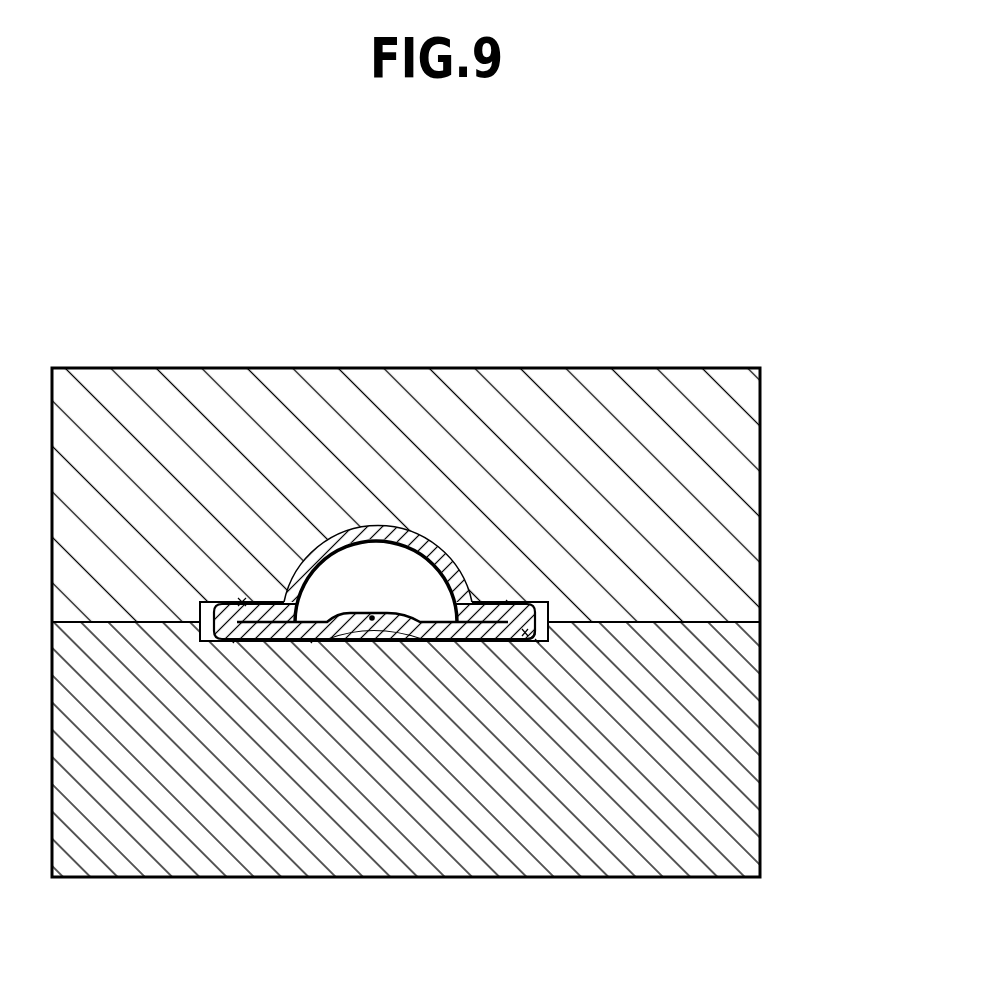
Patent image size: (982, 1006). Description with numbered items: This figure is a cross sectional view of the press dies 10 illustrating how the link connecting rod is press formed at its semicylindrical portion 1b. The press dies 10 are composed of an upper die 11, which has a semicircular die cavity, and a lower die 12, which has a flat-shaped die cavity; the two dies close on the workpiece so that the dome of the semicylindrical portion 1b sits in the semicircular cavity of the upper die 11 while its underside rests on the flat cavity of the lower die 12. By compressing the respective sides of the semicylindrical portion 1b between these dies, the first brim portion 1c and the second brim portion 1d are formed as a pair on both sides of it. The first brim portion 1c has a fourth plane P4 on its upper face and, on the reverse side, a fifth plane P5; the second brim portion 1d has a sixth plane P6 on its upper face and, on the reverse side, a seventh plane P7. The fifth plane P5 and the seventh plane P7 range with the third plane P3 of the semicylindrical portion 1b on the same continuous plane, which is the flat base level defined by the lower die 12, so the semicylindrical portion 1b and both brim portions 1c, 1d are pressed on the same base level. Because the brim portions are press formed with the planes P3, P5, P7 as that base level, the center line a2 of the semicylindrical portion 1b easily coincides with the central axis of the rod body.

The press dies 10 is at (820, 562).
The upper die 11 is at (725, 562).
The lower die 12 is at (718, 683).
The semicylindrical portion 1b is at (440, 547).
The first brim portion 1c is at (533, 640).
The second brim portion 1d is at (220, 602).
The center line of the semicylindrical portion a2 is at (372, 616).
The third plane P3 is at (310, 640).
The fourth plane P4 is at (508, 602).
The fifth plane P5 is at (537, 640).
The sixth plane P6 is at (242, 602).
The seventh plane P7 is at (232, 641).